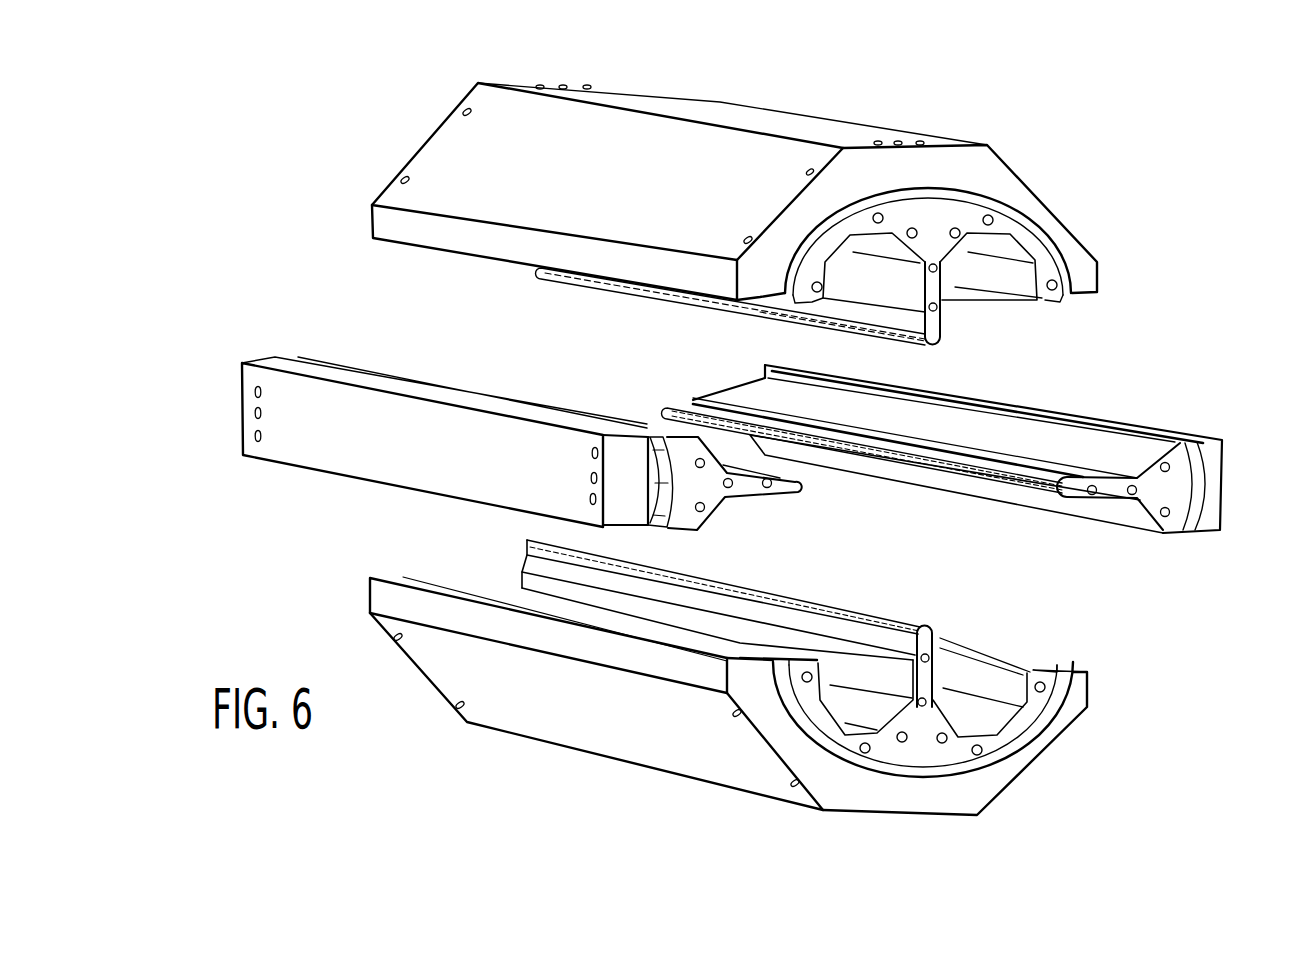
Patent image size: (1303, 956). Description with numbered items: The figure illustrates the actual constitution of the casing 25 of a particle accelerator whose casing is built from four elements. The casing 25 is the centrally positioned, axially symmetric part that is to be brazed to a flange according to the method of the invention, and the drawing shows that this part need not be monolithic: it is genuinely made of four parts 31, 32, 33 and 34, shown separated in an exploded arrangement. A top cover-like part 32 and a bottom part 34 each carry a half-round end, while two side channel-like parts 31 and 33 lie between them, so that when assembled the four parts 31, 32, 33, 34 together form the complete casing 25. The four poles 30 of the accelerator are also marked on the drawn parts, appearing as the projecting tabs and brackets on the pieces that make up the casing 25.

The casing 25 is at (985, 110).
The poles 30 is at (1060, 483).
The casing part 31 is at (260, 375).
The casing part 32 is at (1032, 198).
The casing part 33 is at (1213, 505).
The casing part 34 is at (1010, 762).